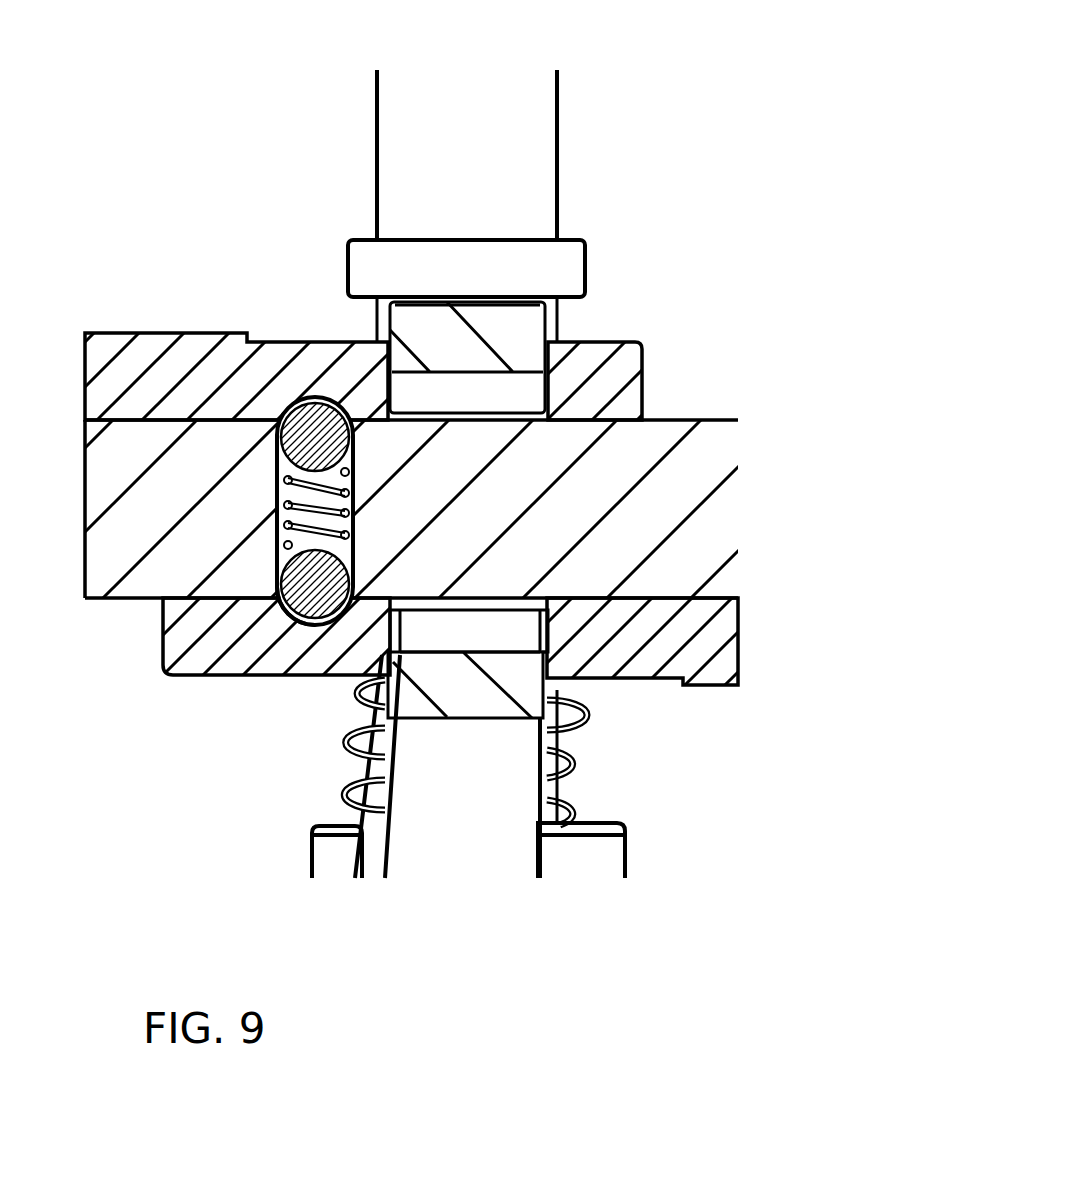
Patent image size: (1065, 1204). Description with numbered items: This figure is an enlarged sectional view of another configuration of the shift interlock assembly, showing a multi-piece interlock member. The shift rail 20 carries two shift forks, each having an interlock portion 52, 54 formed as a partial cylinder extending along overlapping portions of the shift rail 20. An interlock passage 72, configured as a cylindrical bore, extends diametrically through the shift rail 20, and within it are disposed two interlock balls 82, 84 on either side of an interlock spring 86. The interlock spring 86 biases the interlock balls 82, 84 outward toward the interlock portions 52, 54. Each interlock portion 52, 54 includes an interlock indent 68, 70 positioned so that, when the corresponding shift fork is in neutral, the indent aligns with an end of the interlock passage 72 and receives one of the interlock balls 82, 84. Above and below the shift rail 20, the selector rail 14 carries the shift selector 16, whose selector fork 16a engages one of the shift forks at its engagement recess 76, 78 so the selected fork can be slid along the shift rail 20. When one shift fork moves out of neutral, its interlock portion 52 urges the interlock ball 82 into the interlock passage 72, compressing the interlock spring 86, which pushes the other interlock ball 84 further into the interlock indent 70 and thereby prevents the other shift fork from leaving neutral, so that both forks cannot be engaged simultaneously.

The selector rail 14 is at (535, 155).
The shift selector 16 is at (482, 790).
The selector fork 16a is at (535, 332).
The shift rail 20 is at (713, 430).
The interlock portion 52 is at (200, 350).
The interlock portion 54 is at (270, 658).
The interlock indent 68 is at (320, 400).
The interlock indent 70 is at (307, 625).
The interlock passage 72 is at (277, 480).
The engagement recess 76 is at (518, 410).
The engagement recess 78 is at (500, 607).
The interlock ball 82 is at (297, 397).
The interlock ball 84 is at (278, 592).
The interlock spring 86 is at (277, 510).